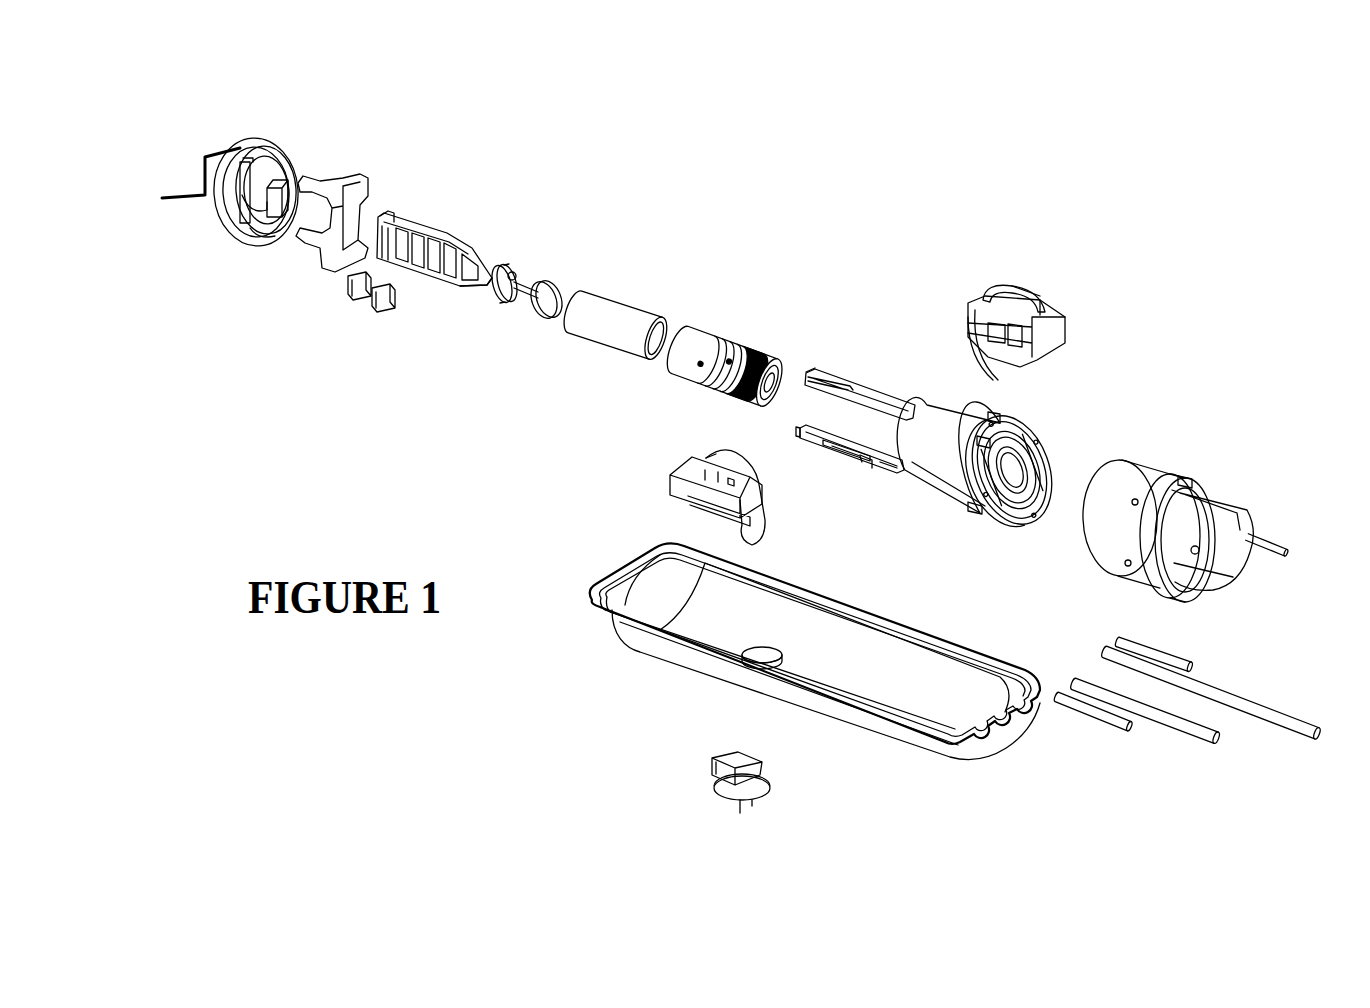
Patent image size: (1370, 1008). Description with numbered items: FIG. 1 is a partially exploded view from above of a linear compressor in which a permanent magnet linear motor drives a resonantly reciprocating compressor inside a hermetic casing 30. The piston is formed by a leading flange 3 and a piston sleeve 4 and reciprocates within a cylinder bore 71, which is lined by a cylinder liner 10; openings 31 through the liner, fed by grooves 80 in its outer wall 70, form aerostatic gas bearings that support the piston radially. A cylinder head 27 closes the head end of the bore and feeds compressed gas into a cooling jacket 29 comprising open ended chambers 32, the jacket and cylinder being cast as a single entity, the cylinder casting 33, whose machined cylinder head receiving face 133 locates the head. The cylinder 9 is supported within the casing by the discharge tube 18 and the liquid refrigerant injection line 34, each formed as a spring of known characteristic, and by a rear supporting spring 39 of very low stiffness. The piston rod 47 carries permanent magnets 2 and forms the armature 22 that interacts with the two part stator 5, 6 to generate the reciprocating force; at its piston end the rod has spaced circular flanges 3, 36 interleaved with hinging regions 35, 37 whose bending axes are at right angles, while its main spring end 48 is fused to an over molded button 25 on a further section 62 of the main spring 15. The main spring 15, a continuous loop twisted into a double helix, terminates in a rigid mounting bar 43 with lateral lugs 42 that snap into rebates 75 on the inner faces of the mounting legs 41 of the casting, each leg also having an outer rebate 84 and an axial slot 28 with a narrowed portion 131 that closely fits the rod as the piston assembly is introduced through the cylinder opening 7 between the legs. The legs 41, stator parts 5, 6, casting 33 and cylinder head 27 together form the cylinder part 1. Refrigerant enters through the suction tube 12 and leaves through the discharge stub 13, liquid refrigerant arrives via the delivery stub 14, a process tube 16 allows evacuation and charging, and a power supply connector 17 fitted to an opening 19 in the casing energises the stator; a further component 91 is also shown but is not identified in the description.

The cylinder part 1 is at (774, 372).
The permanent magnets 2 is at (380, 302).
The leading flange 3 is at (554, 292).
The piston sleeve 4 is at (612, 310).
The stator part 5 is at (1032, 310).
The stator part 6 is at (668, 487).
The cylinder opening 7 is at (902, 433).
The cylinder 9 is at (1010, 487).
The cylinder liner 10 is at (698, 327).
The suction tube 12 is at (1173, 733).
The discharge stub 13 is at (1110, 723).
The liquid refrigerant delivery stub 14 is at (1184, 663).
The main spring 15 is at (290, 143).
The process tube 16 is at (1290, 727).
The power supply connector 17 is at (755, 800).
The discharge tube 18 is at (1213, 570).
The opening 19 is at (745, 650).
The armature 22 is at (432, 236).
The over molded button 25 is at (278, 218).
The cylinder head 27 is at (1168, 462).
The axial slots 28 is at (833, 440).
The cooling jacket 29 is at (937, 417).
The hermetic casing 30 is at (875, 728).
The openings 31 is at (740, 355).
The open ended chambers 32 is at (1033, 440).
The cylinder casting 33 is at (930, 500).
The liquid refrigerant injection line 34 is at (1172, 480).
The hinging region 35 is at (527, 283).
The circular flange 36 is at (513, 272).
The hinging region 37 is at (500, 270).
The rear supporting spring 39 is at (217, 150).
The mounting legs 41 is at (908, 400).
The lugs 42 is at (247, 150).
The mounting bar 43 is at (240, 198).
The piston rod 47 is at (456, 290).
The main spring end 48 is at (394, 219).
The further section 62 is at (255, 240).
The outer wall 70 is at (673, 360).
The cylinder bore 71 is at (781, 377).
The rebate 75 is at (812, 427).
The grooves 80 is at (741, 357).
The additional rebate 84 is at (832, 378).
The bracket 91 is at (354, 212).
The narrowed and shallowed portion 131 is at (860, 453).
The cylinder head receiving face 133 is at (1040, 477).